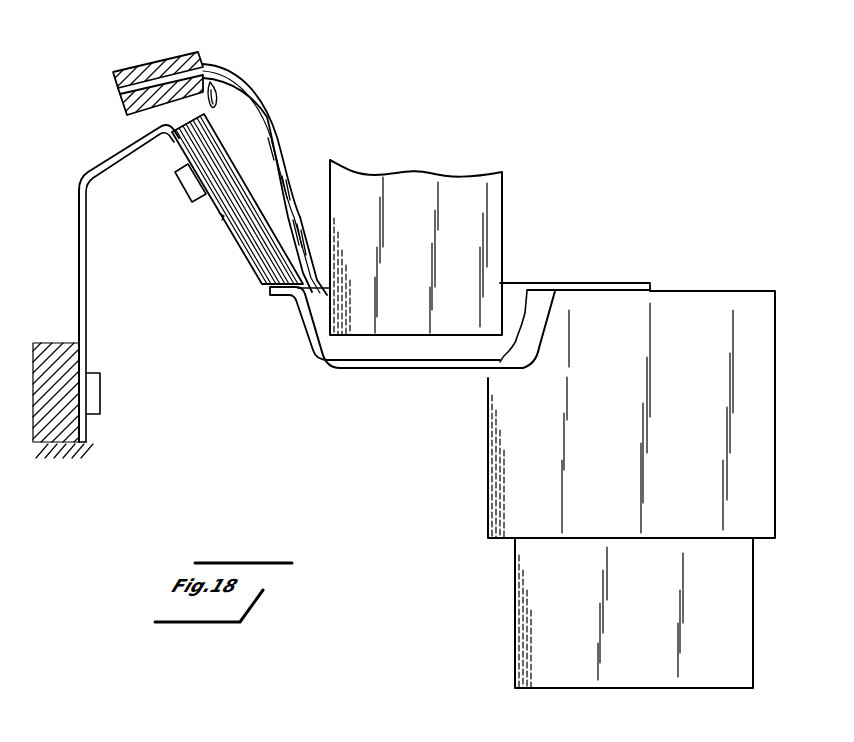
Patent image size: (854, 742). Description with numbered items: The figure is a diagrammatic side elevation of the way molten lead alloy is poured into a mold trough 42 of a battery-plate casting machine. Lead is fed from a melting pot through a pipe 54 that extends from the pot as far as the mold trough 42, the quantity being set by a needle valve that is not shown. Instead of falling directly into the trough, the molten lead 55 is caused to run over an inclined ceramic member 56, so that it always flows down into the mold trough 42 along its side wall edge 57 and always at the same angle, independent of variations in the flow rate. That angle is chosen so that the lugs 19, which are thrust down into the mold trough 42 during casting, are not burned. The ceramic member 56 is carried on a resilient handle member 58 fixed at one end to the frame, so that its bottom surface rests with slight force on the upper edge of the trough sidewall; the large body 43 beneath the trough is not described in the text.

The lug 19 is at (453, 187).
The mold trough 42 is at (310, 349).
The support block 43 is at (764, 479).
The pipe 54 is at (163, 64).
The molten lead 55 is at (265, 117).
The inclined ceramic member 56 is at (242, 238).
The side wall edge 57 is at (292, 298).
The resilient handle member 58 is at (88, 303).